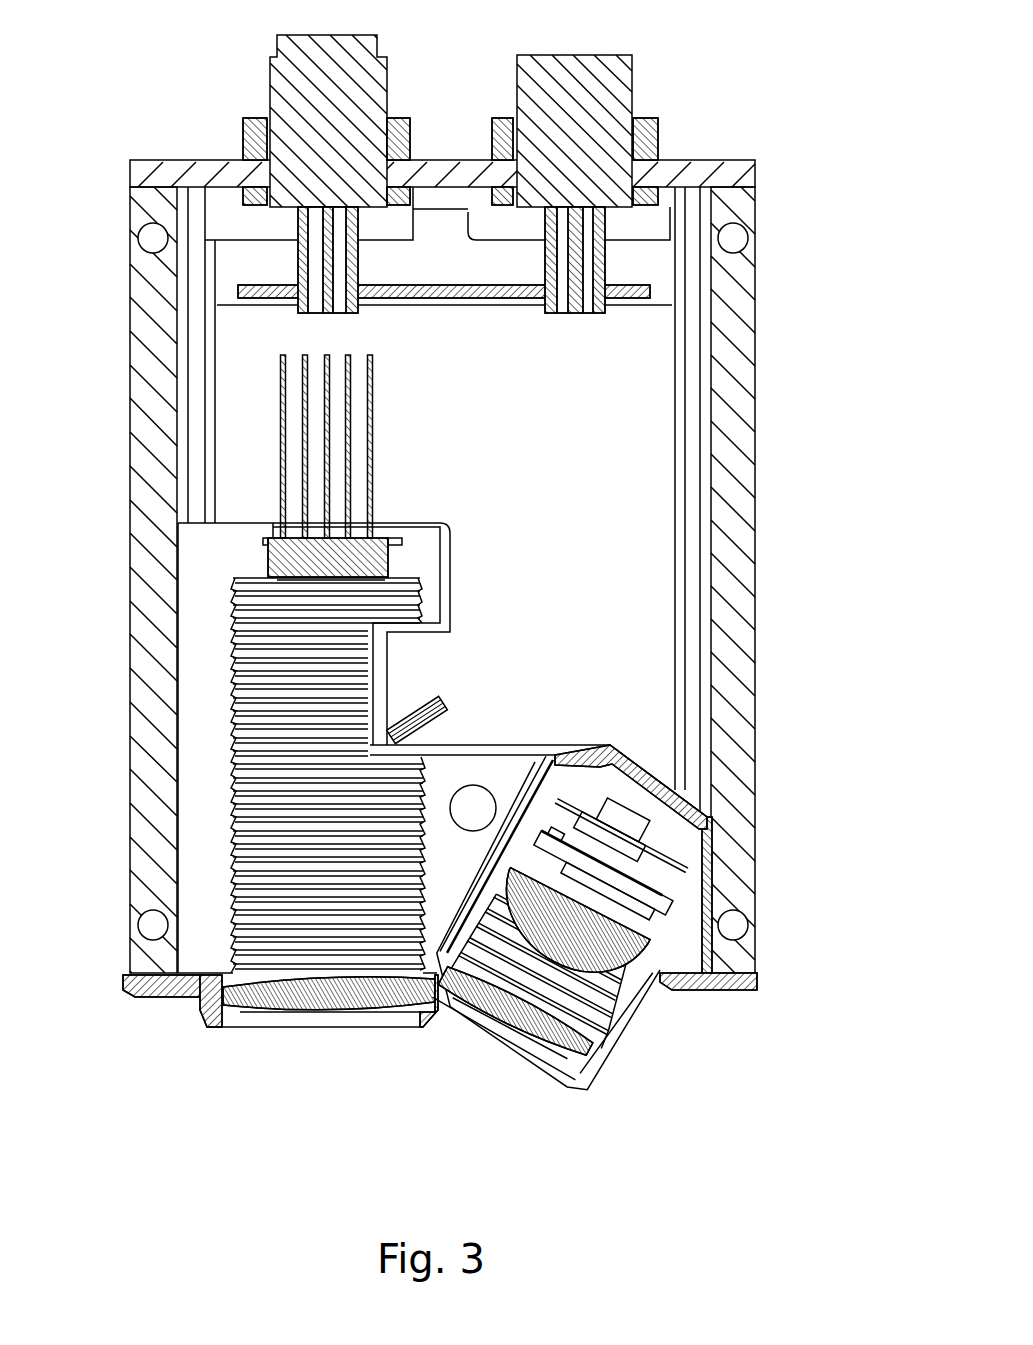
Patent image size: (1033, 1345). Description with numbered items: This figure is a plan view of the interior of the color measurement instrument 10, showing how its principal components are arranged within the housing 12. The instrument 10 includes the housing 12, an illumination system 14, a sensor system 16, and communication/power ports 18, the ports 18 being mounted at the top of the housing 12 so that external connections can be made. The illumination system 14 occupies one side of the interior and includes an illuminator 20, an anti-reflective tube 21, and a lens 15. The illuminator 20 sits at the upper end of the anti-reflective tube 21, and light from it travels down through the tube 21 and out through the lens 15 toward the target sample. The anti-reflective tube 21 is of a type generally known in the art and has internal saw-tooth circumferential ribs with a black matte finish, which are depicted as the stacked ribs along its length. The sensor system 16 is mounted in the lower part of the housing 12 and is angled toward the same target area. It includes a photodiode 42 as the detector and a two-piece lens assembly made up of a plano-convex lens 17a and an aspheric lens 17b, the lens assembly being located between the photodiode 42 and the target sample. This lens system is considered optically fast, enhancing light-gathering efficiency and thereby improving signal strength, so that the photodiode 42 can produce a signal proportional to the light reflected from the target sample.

The color measurement instrument 10 is at (482, 636).
The housing 12 is at (779, 458).
The illumination system 14 is at (221, 840).
The lens 15 is at (322, 1013).
The sensor system 16 is at (659, 927).
The plano-convex lens 17a is at (500, 1032).
The aspheric lens 17b is at (585, 940).
The communication/power ports 18 is at (253, 80).
The illuminator 20 is at (300, 552).
The anti-reflective tube 21 is at (248, 898).
The photodiode 42 is at (667, 804).